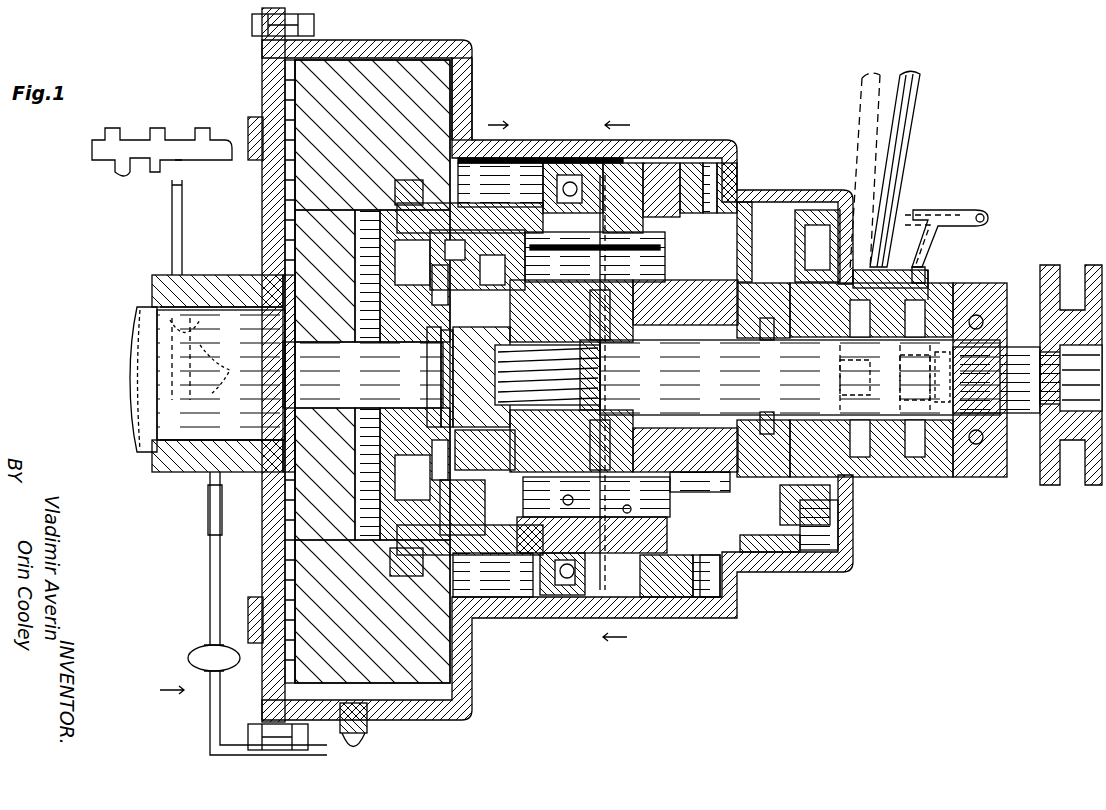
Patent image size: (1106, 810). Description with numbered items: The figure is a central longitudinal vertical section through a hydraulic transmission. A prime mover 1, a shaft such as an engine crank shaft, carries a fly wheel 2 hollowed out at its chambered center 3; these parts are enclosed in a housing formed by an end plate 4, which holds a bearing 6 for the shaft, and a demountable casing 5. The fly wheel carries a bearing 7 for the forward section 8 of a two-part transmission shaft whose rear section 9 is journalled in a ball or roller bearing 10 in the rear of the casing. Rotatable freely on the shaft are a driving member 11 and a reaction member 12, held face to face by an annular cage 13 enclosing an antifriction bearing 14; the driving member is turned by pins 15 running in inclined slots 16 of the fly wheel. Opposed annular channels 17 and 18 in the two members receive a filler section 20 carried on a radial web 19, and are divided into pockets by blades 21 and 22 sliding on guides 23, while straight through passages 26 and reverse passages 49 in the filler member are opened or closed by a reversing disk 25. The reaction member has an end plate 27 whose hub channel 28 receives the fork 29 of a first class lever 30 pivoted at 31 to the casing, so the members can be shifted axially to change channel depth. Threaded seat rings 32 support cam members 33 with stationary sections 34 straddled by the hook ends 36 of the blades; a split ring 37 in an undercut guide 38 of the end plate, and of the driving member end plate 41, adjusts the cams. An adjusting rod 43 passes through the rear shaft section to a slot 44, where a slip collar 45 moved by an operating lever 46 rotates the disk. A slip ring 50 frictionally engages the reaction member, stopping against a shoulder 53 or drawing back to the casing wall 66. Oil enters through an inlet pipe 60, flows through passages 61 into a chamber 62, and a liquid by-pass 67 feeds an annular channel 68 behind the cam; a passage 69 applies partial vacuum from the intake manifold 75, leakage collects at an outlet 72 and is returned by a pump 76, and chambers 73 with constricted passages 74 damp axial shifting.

The prime mover 1 is at (150, 348).
The fly wheel 2 is at (335, 100).
The chambered center 3 is at (518, 262).
The end plate 4 is at (253, 583).
The demountable casing 5 is at (598, 140).
The bearing 6 is at (160, 470).
The bearing 7 is at (320, 440).
The forward section 8 is at (363, 375).
The rear section 9 is at (800, 377).
The bearing 10 is at (975, 446).
The driving member 11 is at (530, 210).
The reaction member 12 is at (713, 213).
The annular cage 13 is at (570, 560).
The antifriction bearing 14 is at (556, 558).
The pins 15 is at (455, 125).
The slots 16 is at (408, 182).
The annular channel 17 is at (505, 560).
The annular channel 18 is at (686, 253).
The radial web 19 is at (632, 322).
The filler section 20 is at (635, 265).
The blades 21 is at (477, 260).
The blades 22 is at (755, 572).
The guides 23 is at (660, 500).
The reversing disk 25 is at (685, 376).
The straight through passages 26 is at (655, 263).
The end plate 27 is at (818, 230).
The circumferential channel 28 is at (873, 458).
The fork 29 is at (842, 393).
The first class lever 30 is at (905, 122).
The pivot 31 is at (915, 268).
The threaded seat rings 32 is at (423, 437).
The cam member 33 is at (376, 258).
The stationary sections 34 is at (445, 500).
The hook end 36 is at (828, 568).
The ring 37 is at (840, 538).
The undercut guide 38 is at (853, 248).
The end plate 41 is at (392, 450).
The adjusting rod 43 is at (577, 375).
The slot 44 is at (930, 380).
The slip collar 45 is at (852, 442).
The operating lever 46 is at (975, 210).
The reverse passages 49 is at (648, 560).
The slip ring 50 is at (707, 620).
The shoulder 53 is at (616, 160).
The inlet pipe 60 is at (210, 530).
The passages 61 is at (232, 358).
The chamber 62 is at (547, 398).
The wall 66 is at (740, 165).
The liquid by-pass 67 is at (488, 344).
The annular channel 68 is at (427, 327).
The passage 69 is at (157, 327).
The outlet 72 is at (360, 735).
The chambers 73 is at (603, 443).
The constricted passages 74 is at (595, 257).
The intake manifold 75 is at (107, 140).
The pump 76 is at (200, 660).